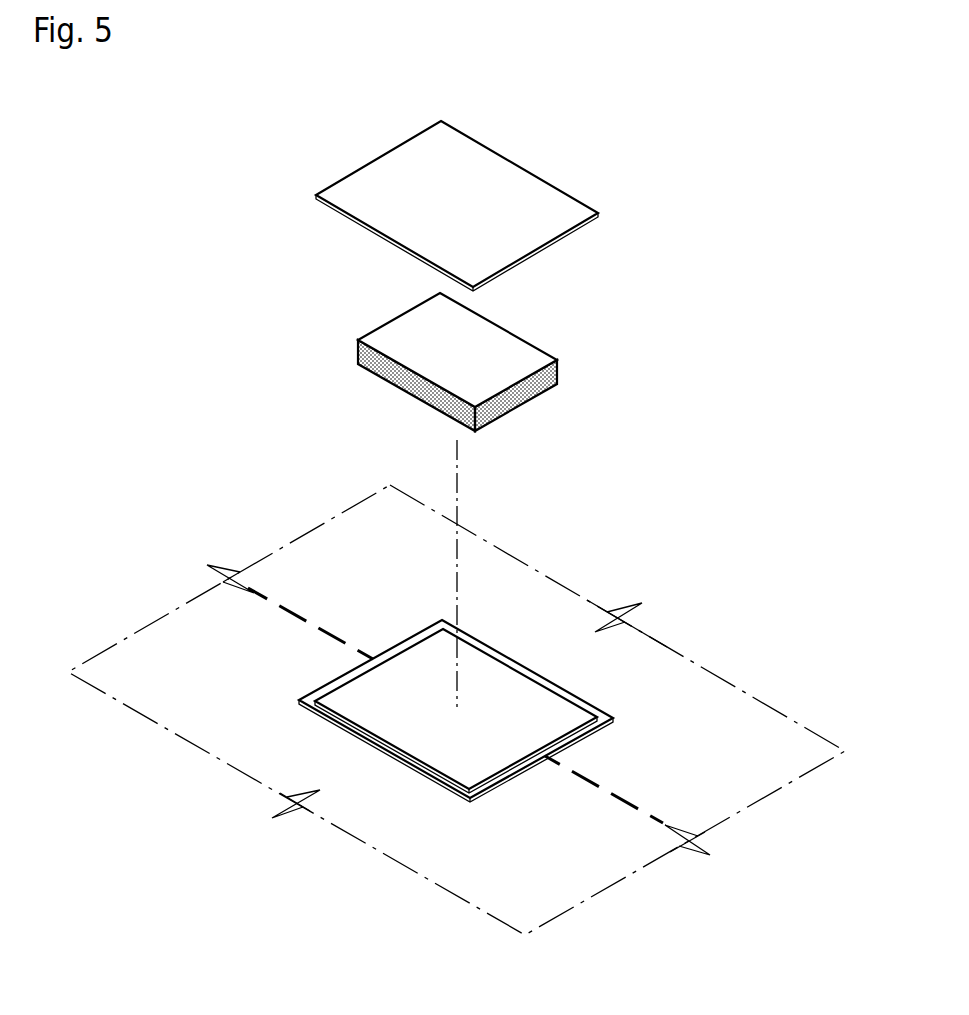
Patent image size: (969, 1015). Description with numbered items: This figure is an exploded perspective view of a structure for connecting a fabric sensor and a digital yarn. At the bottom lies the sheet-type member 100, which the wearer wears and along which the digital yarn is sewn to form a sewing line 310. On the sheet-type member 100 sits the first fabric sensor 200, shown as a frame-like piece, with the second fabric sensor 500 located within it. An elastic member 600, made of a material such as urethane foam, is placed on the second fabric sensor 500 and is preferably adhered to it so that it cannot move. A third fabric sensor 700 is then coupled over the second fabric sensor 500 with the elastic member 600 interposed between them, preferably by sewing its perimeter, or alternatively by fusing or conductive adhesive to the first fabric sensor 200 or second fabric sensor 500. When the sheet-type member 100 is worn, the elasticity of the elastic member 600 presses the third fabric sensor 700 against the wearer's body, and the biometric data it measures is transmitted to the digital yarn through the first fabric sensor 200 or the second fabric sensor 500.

The sheet-type member 100 is at (738, 727).
The first fabric sensor 200 is at (609, 708).
The sewing line 310 is at (603, 793).
The second fabric sensor 500 is at (510, 687).
The elastic member 600 is at (517, 356).
The third fabric sensor 700 is at (503, 185).